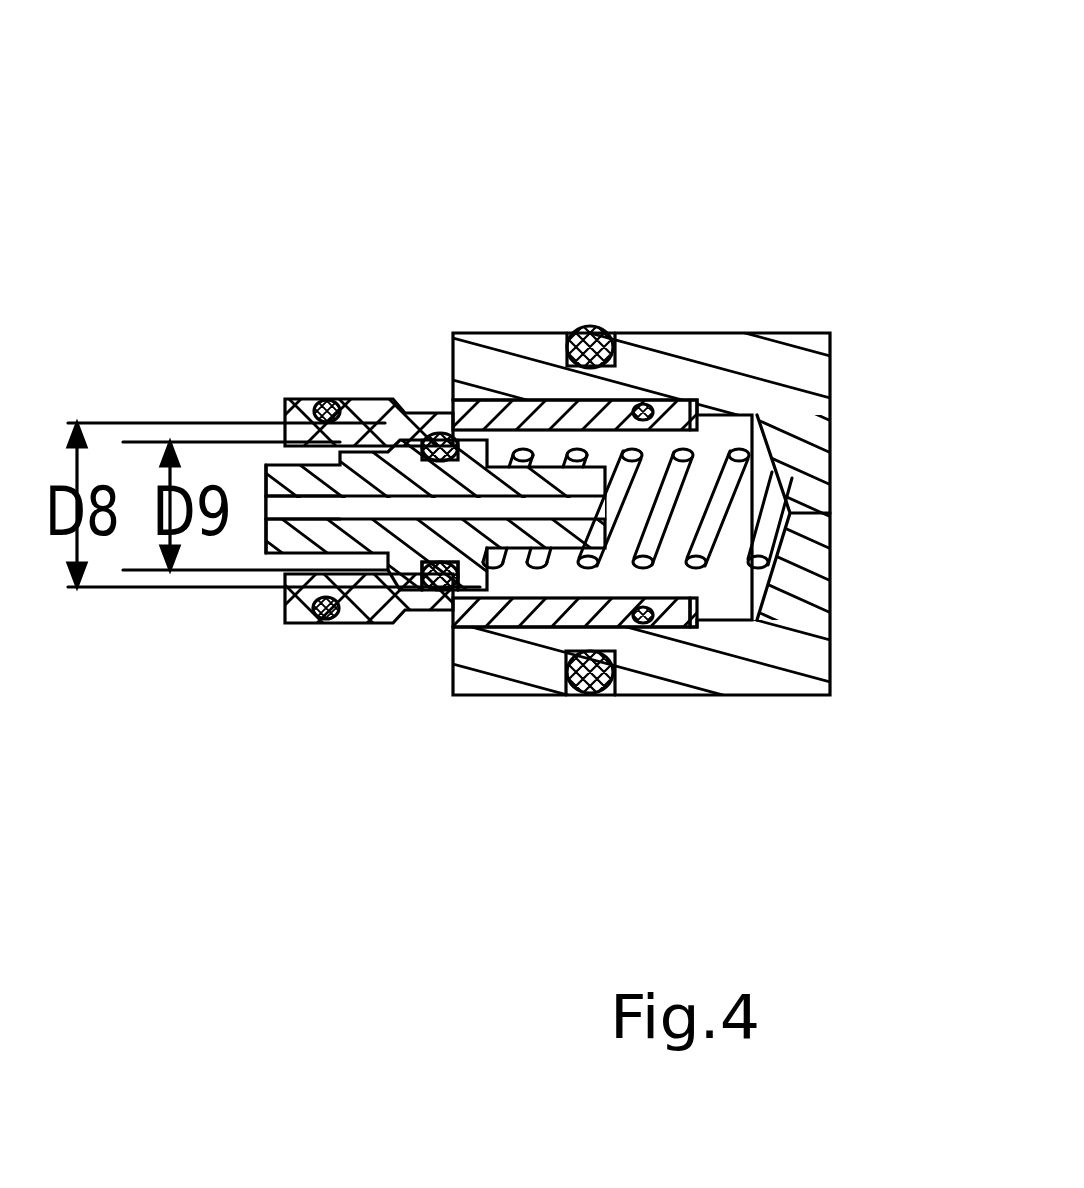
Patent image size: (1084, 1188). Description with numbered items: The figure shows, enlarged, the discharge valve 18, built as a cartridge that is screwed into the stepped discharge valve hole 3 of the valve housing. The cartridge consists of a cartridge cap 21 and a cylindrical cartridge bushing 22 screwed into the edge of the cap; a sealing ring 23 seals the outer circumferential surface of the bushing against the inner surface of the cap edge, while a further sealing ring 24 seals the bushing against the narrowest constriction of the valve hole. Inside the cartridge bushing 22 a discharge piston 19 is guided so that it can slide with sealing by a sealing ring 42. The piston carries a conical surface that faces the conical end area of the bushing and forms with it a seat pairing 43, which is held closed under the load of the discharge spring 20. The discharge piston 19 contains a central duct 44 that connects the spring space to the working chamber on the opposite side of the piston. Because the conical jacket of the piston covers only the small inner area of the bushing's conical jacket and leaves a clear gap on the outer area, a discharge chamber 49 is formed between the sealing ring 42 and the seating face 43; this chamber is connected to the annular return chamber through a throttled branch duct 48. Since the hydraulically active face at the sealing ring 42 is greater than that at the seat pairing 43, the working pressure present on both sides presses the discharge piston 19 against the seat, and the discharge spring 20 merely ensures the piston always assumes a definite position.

The discharge valve hole 3 is at (435, 517).
The discharge valve 18 is at (792, 292).
The discharge piston 19 is at (294, 480).
The discharge spring 20 is at (647, 563).
The cartridge cap 21 is at (737, 333).
The cartridge bushing 22 is at (527, 410).
The sealing ring 23 is at (770, 405).
The sealing ring 24 is at (428, 605).
The sealing ring 42 is at (478, 605).
The seat pairing 43 is at (313, 432).
The central duct 44 is at (300, 548).
The throttled branch duct 48 is at (360, 623).
The discharge chamber 49 is at (375, 440).